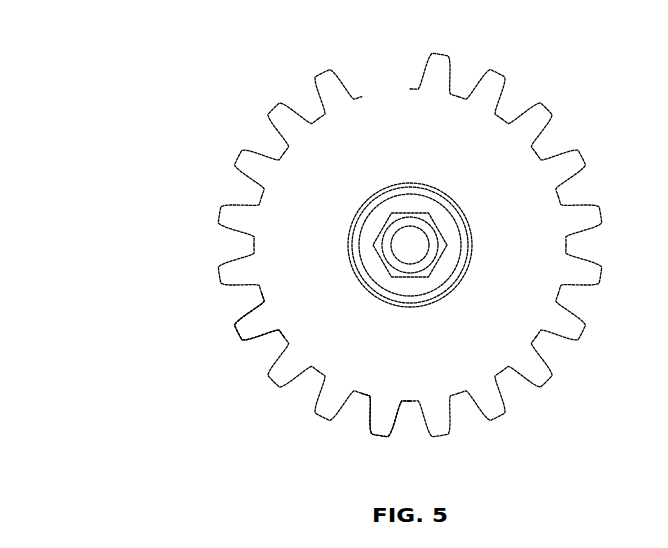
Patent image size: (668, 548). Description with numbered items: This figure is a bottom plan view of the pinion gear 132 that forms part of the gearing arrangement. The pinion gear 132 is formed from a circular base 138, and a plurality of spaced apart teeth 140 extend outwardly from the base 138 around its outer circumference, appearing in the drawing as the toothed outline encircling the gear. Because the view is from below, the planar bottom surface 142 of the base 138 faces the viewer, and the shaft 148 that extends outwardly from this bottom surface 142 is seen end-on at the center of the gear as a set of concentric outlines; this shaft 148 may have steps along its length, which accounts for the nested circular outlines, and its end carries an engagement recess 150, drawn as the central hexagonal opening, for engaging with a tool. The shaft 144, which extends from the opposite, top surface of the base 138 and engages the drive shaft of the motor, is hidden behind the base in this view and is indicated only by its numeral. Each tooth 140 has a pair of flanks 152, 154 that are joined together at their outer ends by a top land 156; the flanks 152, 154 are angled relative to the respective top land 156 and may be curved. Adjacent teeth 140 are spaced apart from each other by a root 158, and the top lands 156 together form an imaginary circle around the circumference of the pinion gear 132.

The pinion gear 132 is at (272, 101).
The circular base 138 is at (445, 148).
The teeth 140 is at (245, 275).
The bottom surface 142 is at (485, 328).
The shaft 144 is at (552, 547).
The shaft 148 is at (448, 224).
The engagement recess 150 is at (440, 248).
The flank 152 is at (373, 423).
The flank 154 is at (395, 430).
The top land 156 is at (393, 430).
The root 158 is at (318, 375).